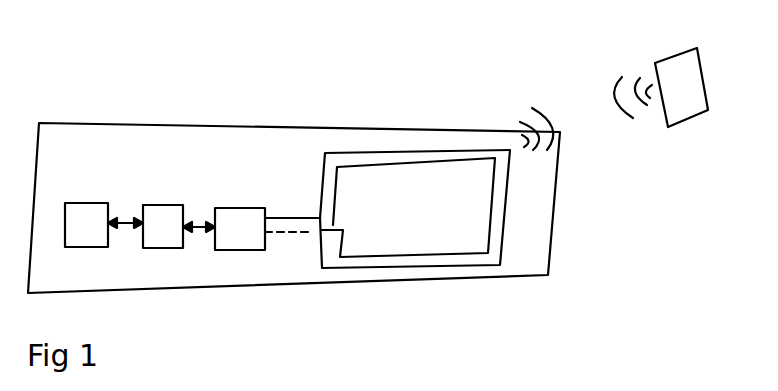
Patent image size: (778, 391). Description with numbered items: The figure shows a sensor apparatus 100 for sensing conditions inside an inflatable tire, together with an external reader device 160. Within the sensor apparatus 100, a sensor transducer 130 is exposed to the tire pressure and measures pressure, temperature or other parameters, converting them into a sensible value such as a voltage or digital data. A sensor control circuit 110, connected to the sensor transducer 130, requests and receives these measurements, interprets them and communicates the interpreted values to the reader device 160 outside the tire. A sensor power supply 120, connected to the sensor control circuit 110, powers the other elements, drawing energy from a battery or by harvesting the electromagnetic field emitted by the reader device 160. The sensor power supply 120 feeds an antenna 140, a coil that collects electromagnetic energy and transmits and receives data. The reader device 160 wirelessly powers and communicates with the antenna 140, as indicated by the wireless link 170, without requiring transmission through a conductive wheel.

The sensor apparatus 100 is at (87, 120).
The sensor control circuit 110 is at (167, 205).
The sensor power supply 120 is at (240, 208).
The sensor transducer 130 is at (90, 202).
The antenna 140 is at (408, 150).
The reader device 160 is at (703, 70).
The wireless power and communication 170 is at (608, 73).